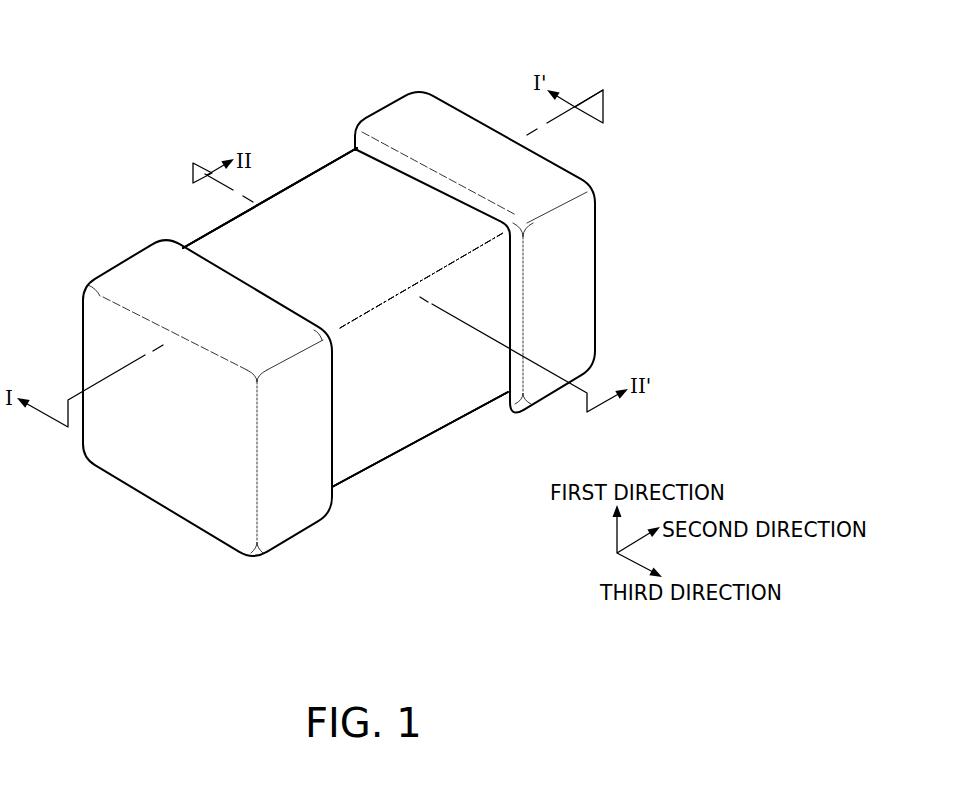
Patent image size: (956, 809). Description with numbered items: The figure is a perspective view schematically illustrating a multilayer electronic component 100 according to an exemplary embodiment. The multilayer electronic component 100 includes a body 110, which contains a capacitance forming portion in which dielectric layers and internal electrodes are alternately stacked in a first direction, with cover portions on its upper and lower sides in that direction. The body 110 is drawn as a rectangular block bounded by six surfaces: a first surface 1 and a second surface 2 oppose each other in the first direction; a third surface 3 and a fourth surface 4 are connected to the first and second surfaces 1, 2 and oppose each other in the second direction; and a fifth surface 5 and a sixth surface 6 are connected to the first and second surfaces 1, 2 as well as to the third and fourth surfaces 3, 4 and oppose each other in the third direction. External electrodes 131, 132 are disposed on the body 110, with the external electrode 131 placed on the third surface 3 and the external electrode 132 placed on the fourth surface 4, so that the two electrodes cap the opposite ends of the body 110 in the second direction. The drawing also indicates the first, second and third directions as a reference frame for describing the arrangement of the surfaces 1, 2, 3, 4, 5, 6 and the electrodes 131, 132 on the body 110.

The multilayer electronic component 100 is at (126, 62).
The body 110 is at (212, 247).
The external electrode 131 is at (140, 273).
The external electrode 132 is at (402, 122).
The first surface 1 is at (383, 418).
The second surface 2 is at (356, 192).
The third surface 3 is at (166, 470).
The fourth surface 4 is at (557, 256).
The fifth surface 5 is at (434, 388).
The sixth surface 6 is at (322, 216).